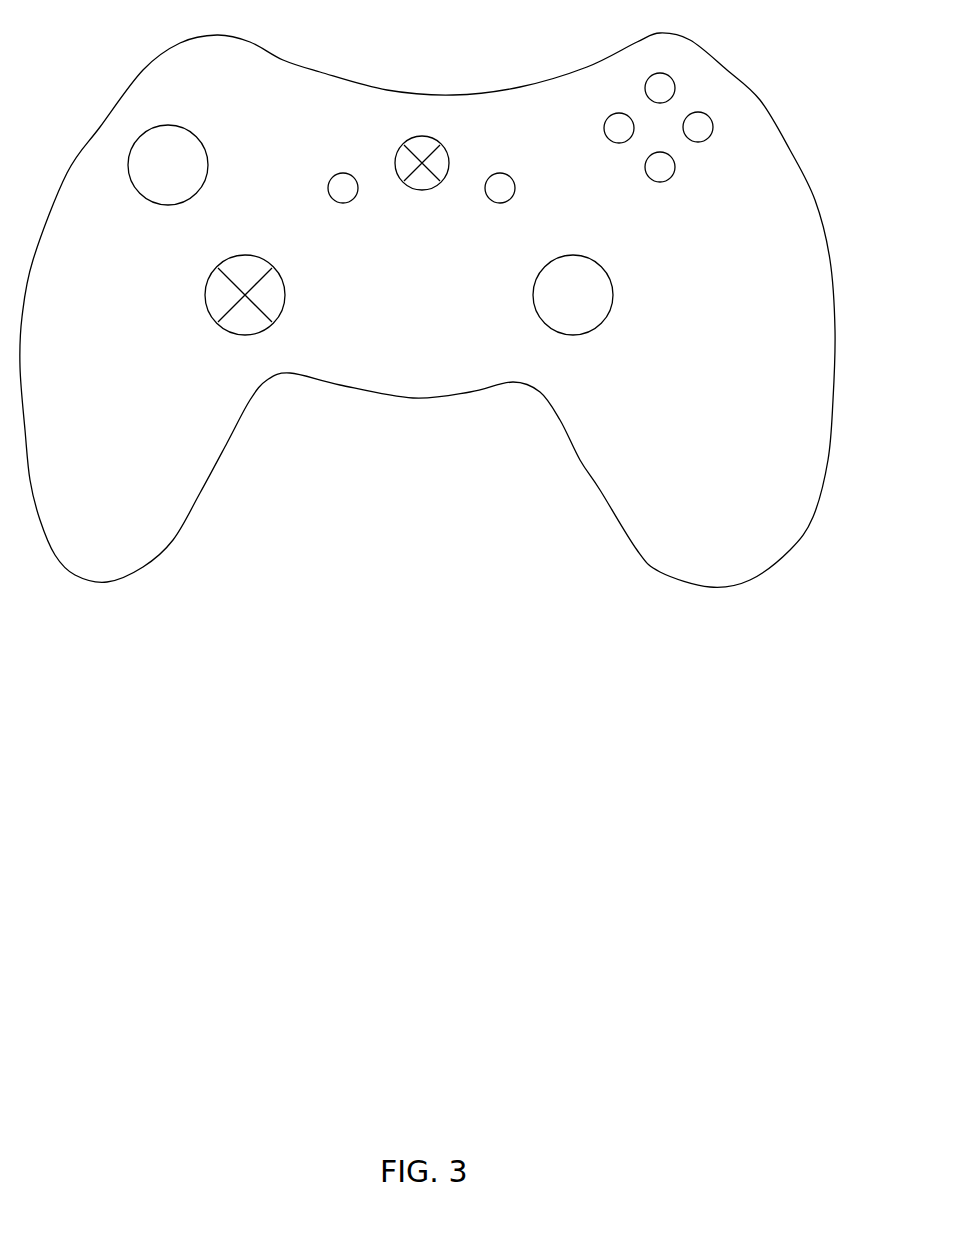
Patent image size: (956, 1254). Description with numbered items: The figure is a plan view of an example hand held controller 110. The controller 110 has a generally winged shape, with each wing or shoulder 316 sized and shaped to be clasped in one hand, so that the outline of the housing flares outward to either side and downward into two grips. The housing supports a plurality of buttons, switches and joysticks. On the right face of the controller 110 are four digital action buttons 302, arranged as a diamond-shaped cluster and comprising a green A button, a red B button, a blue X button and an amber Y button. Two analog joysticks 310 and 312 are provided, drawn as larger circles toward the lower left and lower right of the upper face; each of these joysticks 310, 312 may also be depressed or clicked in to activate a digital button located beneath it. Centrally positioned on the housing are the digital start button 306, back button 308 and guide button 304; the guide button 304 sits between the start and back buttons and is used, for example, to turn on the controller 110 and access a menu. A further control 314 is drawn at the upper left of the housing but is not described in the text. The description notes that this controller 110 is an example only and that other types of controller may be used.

The hand held controller 110 is at (715, 67).
The digital action buttons 302 is at (646, 84).
The guide button 304 is at (436, 140).
The start button 306 is at (515, 188).
The back button 308 is at (332, 177).
The analog joystick 310 is at (613, 292).
The analog joystick 312 is at (285, 293).
The thumbstick 314 is at (141, 136).
The wing or shoulder 316 is at (782, 528).